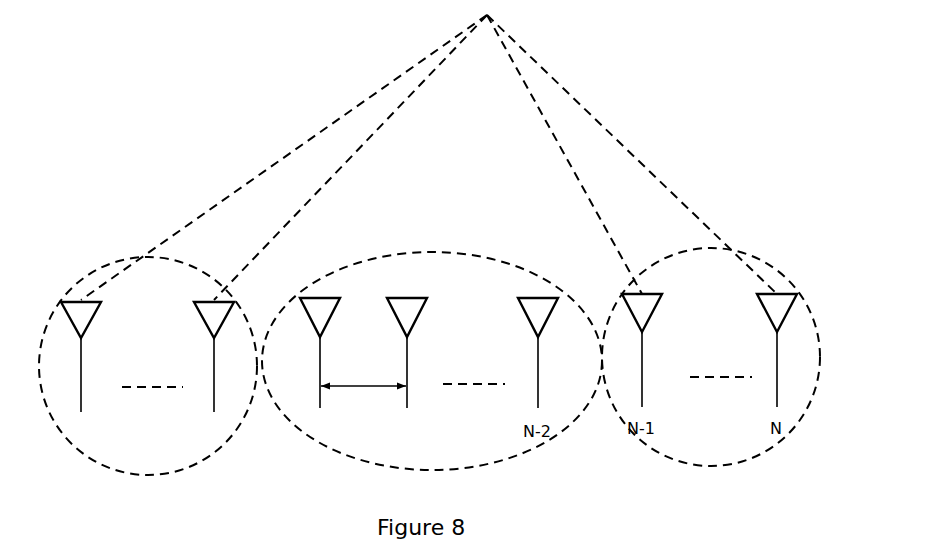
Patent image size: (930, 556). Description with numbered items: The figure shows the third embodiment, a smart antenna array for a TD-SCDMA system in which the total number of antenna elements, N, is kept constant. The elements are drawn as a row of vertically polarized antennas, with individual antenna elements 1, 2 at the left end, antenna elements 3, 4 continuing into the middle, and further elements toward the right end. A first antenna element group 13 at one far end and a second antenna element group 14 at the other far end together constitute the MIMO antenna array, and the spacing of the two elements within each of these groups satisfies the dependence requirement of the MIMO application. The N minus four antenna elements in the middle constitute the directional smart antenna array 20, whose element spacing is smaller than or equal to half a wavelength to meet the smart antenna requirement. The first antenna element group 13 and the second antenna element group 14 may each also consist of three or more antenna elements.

The first antenna element group 13 is at (143, 340).
The second antenna element group 14 is at (712, 331).
The directional smart antenna array 20 is at (432, 375).
The antenna element 1 is at (81, 374).
The antenna element 2 is at (214, 374).
The antenna element 3 is at (320, 370).
The antenna element 4 is at (407, 370).